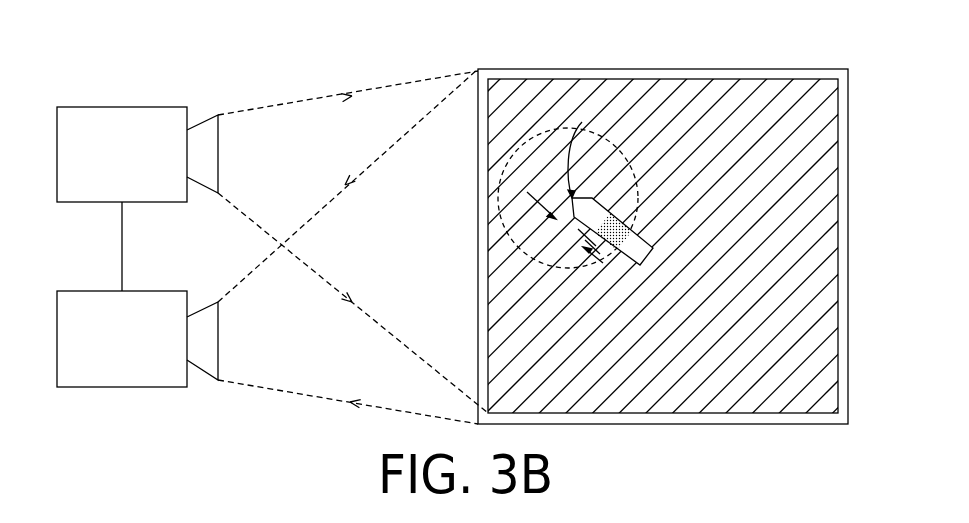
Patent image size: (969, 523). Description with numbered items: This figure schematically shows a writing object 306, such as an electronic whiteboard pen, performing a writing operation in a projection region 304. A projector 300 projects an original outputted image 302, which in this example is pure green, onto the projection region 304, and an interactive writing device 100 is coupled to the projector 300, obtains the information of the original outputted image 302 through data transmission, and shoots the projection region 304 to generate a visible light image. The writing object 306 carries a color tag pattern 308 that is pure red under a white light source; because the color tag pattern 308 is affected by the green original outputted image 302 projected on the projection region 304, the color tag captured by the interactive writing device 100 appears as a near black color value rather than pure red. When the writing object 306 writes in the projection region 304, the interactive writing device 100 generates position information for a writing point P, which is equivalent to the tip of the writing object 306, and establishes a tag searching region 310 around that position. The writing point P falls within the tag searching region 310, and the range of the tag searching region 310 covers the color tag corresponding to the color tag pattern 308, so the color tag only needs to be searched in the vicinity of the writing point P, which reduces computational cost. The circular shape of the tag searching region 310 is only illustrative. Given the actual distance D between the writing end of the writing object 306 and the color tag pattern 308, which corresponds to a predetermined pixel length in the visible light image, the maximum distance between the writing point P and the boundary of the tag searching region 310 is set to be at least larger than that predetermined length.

The interactive writing device 100 is at (87, 291).
The projector 300 is at (88, 107).
The original outputted image 302 is at (672, 82).
The projection region 304 is at (763, 69).
The writing object 306 is at (644, 236).
The color tag pattern 308 is at (622, 220).
The tag searching region 310 is at (567, 273).
The writing point P is at (589, 146).
The actual distance D is at (565, 227).